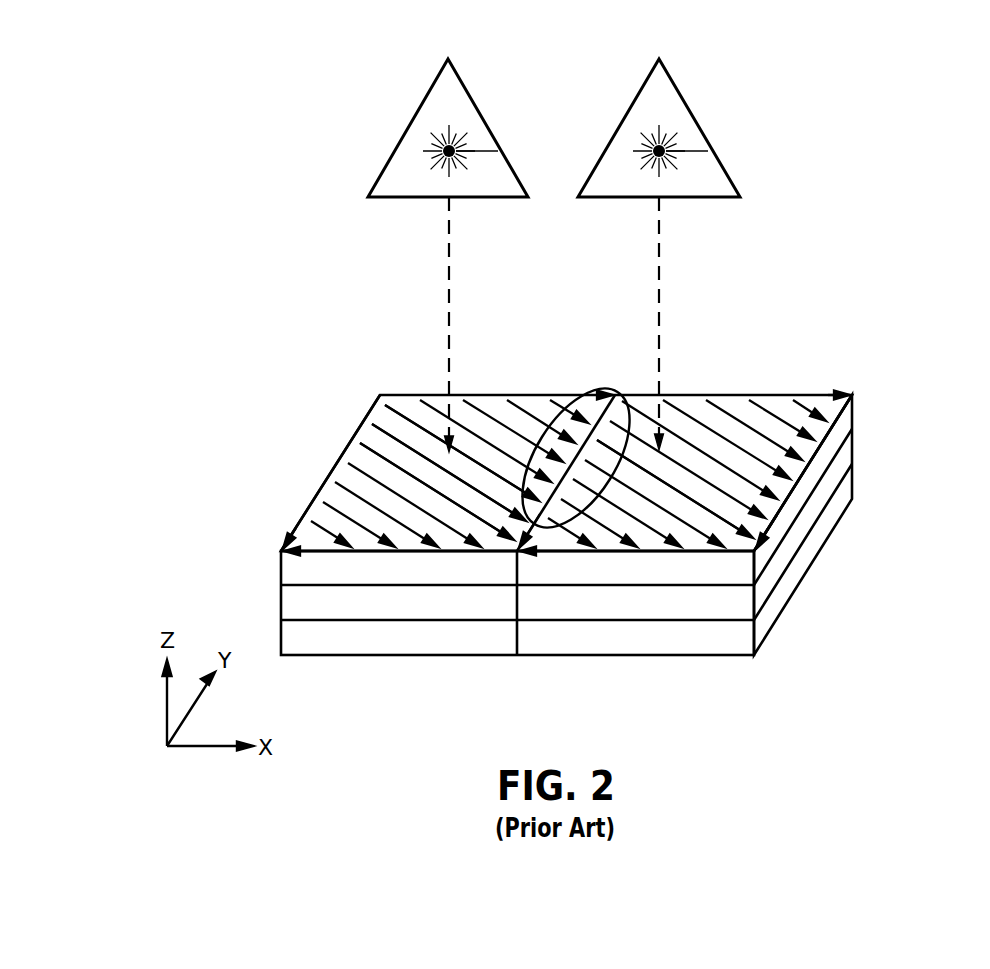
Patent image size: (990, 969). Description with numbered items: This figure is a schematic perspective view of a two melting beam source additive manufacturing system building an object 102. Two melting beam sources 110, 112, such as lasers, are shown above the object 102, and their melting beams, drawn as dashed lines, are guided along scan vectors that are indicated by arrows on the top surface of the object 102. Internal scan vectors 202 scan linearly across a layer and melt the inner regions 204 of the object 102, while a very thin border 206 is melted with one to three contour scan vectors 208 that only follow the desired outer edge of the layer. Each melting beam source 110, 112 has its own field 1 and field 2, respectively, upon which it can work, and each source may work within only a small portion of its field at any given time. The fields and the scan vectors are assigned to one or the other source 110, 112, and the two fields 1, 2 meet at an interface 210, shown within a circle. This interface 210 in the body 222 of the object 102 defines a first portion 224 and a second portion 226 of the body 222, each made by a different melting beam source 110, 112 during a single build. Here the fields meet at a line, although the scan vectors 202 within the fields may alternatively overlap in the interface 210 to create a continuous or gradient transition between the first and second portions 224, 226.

The field 1 is at (367, 380).
The field 2 is at (707, 366).
The object 102 is at (893, 385).
The melting beam source 110 is at (407, 128).
The melting beam source 112 is at (703, 122).
The internal scan vectors 202 is at (518, 398).
The inner regions 204 is at (416, 472).
The border 206 is at (418, 398).
The contour scan vectors 208 is at (565, 395).
The interface 210 is at (633, 402).
The body 222 is at (517, 603).
The first portion 224 is at (407, 542).
The second portion 226 is at (642, 542).